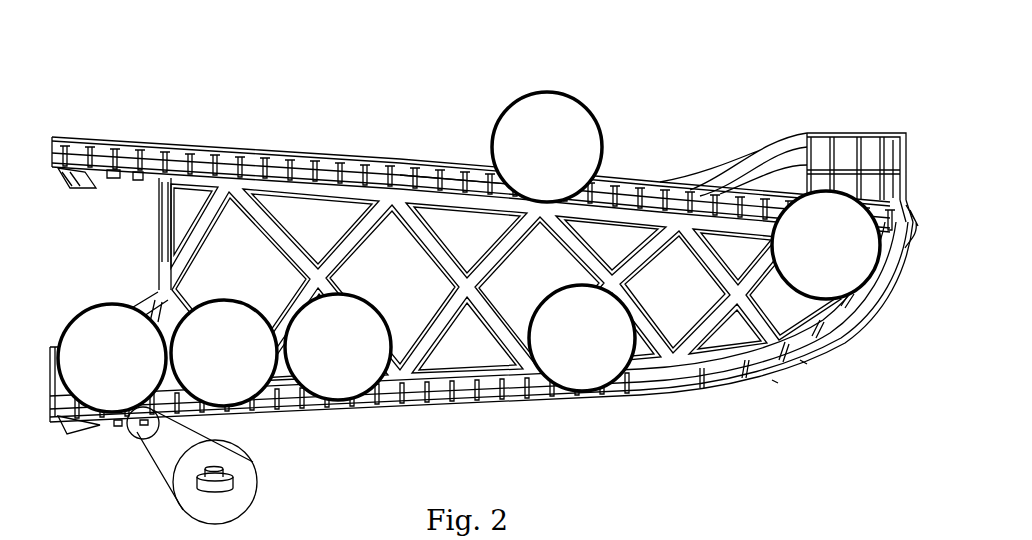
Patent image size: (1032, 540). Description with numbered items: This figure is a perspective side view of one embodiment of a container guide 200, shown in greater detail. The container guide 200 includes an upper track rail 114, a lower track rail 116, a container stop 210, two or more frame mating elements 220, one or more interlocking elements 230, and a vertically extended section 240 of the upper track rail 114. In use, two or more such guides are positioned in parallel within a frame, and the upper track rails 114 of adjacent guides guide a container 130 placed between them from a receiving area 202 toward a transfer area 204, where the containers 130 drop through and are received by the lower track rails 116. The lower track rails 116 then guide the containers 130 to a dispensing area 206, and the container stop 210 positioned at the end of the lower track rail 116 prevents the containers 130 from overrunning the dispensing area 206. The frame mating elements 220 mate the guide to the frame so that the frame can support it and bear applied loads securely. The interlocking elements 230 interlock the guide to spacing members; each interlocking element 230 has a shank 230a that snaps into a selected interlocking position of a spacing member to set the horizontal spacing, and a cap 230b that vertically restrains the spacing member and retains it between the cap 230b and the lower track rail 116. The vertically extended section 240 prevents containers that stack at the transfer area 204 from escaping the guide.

The container guide 200 is at (467, 46).
The receiving area 202 is at (88, 106).
The transfer area 204 is at (850, 117).
The dispensing area 206 is at (93, 280).
The container stop 210 is at (55, 348).
The frame mating elements 220 is at (85, 432).
The interlocking elements 230 is at (120, 428).
The shank 230a is at (233, 476).
The cap 230b is at (237, 483).
The vertically extended section 240 is at (805, 133).
The upper track rail 114 is at (470, 192).
The lower track rail 116 is at (453, 400).
The container 130 is at (97, 370).